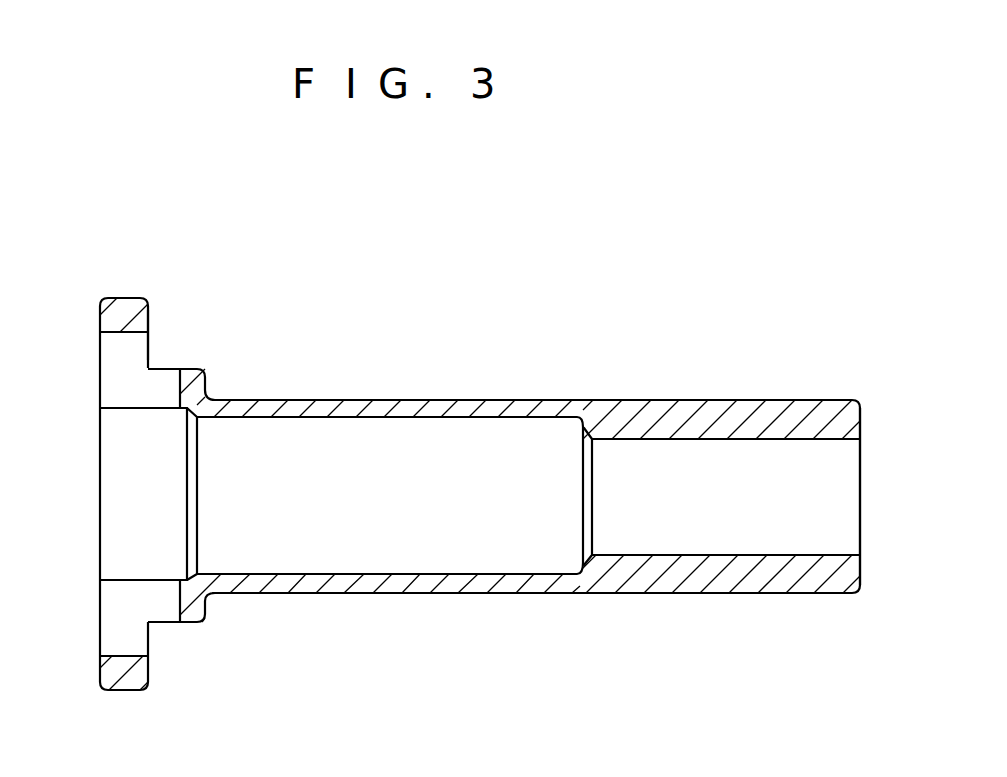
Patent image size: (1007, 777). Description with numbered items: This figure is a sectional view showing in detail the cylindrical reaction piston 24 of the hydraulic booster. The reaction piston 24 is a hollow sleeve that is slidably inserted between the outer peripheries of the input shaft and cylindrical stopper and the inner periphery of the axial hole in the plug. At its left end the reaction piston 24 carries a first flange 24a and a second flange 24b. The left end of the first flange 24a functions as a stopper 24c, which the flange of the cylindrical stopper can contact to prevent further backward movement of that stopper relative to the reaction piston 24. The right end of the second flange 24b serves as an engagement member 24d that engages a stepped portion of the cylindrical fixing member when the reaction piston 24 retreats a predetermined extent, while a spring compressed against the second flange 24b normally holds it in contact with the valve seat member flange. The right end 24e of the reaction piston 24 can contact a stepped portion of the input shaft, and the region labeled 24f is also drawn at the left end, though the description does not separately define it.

The reaction piston 24 is at (533, 464).
The first flange 24a is at (203, 393).
The second flange 24b is at (132, 312).
The stopper 24c is at (178, 386).
The engagement member 24d is at (152, 317).
The right end 24e is at (862, 422).
The recess 24f is at (183, 604).